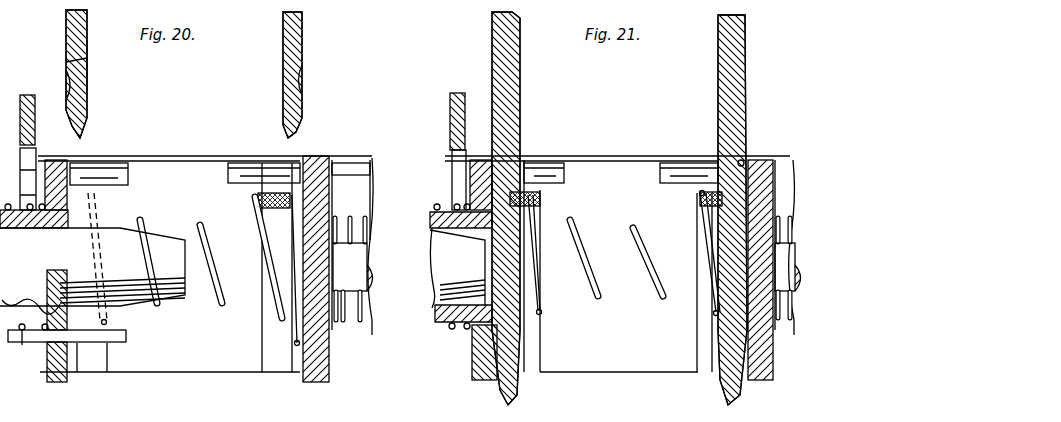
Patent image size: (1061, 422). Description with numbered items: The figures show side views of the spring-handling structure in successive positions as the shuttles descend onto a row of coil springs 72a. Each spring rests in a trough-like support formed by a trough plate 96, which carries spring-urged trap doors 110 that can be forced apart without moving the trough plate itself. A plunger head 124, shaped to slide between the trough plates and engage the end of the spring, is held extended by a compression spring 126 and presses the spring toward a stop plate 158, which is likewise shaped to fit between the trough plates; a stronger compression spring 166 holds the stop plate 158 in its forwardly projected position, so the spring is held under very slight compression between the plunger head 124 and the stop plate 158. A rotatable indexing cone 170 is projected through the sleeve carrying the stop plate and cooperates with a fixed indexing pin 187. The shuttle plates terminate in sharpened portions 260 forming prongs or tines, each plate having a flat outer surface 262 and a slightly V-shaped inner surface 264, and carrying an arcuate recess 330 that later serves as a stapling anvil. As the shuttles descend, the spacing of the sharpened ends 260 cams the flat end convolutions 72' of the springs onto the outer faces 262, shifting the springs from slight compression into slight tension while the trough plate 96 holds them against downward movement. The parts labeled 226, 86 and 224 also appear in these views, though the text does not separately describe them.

In FIG. 20, the blade 226 is at (78, 24).
In FIG. 21, the blade 226 is at (512, 88).
In FIG. 20, the shuttle plate outer surface 262 is at (66, 42).
In FIG. 20, the arcuate recess 330 is at (70, 78).
In FIG. 20, the inner surface 264 is at (87, 62).
In FIG. 20, the blade 86 is at (300, 28).
In FIG. 20, the blade 224 is at (300, 100).
In FIG. 21, the blade 224 is at (725, 88).
In FIG. 20, the sharpened portion 260 is at (82, 140).
In FIG. 20, the plunger head 124 is at (322, 158).
In FIG. 21, the plunger head 124 is at (768, 158).
In FIG. 20, the compression spring 126 is at (352, 222).
In FIG. 20, the row of springs 72a is at (200, 225).
In FIG. 21, the row of springs 72a is at (600, 300).
In FIG. 20, the fixed indexing pin 187 is at (112, 340).
In FIG. 20, the rotatable indexing cone 170 is at (186, 300).
In FIG. 21, the rotatable indexing cone 170 is at (447, 262).
In FIG. 20, the trap door 110 is at (100, 361).
In FIG. 21, the trap door 110 is at (533, 348).
In FIG. 20, the compression spring 166 is at (22, 345).
In FIG. 20, the stop plate 158 is at (58, 383).
In FIG. 21, the stop plate 158 is at (492, 150).
In FIG. 20, the flat end convolution 72' is at (191, 303).
In FIG. 20, the trough plate 96 is at (198, 372).
In FIG. 21, the trough plate 96 is at (600, 372).